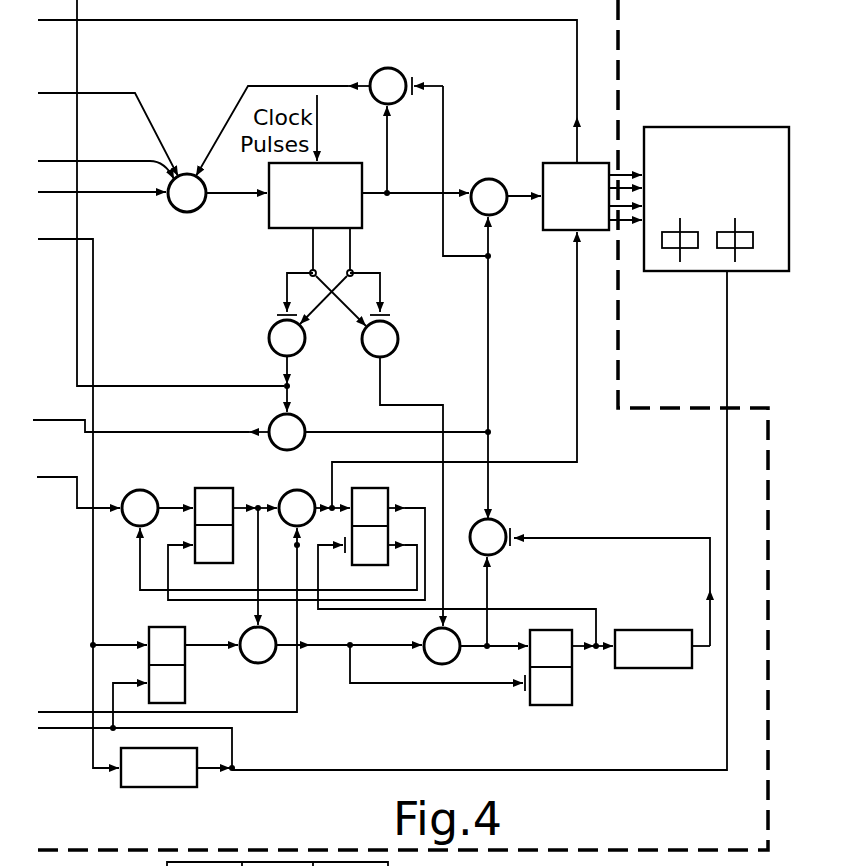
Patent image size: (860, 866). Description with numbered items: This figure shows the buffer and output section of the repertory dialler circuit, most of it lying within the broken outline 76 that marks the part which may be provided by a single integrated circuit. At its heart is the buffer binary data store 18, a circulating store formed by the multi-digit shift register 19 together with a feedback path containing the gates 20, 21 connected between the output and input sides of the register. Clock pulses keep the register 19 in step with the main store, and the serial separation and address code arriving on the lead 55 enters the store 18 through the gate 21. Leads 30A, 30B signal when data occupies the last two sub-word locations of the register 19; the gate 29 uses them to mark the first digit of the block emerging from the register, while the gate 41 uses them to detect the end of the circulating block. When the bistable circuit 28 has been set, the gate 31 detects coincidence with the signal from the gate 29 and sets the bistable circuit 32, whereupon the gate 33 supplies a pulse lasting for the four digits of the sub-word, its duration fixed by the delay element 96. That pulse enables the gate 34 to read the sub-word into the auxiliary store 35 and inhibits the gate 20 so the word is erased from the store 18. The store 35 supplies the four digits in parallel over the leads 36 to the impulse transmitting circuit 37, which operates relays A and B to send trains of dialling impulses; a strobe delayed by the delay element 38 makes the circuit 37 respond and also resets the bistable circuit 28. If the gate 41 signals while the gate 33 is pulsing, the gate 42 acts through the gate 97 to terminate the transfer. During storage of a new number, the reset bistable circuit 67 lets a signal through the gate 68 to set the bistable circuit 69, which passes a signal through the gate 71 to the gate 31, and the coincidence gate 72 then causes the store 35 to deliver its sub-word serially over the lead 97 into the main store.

The buffer binary data store 18 is at (360, 136).
The multi-digit shift register 19 is at (355, 170).
The gate 20 is at (385, 68).
The gate 21 is at (199, 208).
The bistable circuit 28 is at (186, 678).
The gate 29 is at (398, 338).
The lead 30A is at (305, 235).
The lead 30B is at (360, 232).
The gate 31 is at (422, 636).
The bistable circuit 32 is at (573, 675).
The gate 33 is at (500, 522).
The gate 34 is at (500, 180).
The auxiliary store 35 is at (555, 163).
The leads 36 is at (627, 187).
The impulse transmitting circuit 37 is at (735, 127).
The delay element 38 is at (175, 787).
The gate 41 is at (269, 338).
The gate 42 is at (295, 415).
The lead 55 is at (107, 195).
The bistable circuit 67 is at (385, 490).
The gate 68 is at (148, 492).
The bistable circuit 69 is at (225, 488).
The gate 71 is at (262, 663).
The coincidence gate 72 is at (283, 494).
The broken outline 76 is at (620, 4).
The delay element 96 is at (670, 668).
The lead 97 is at (482, 20).